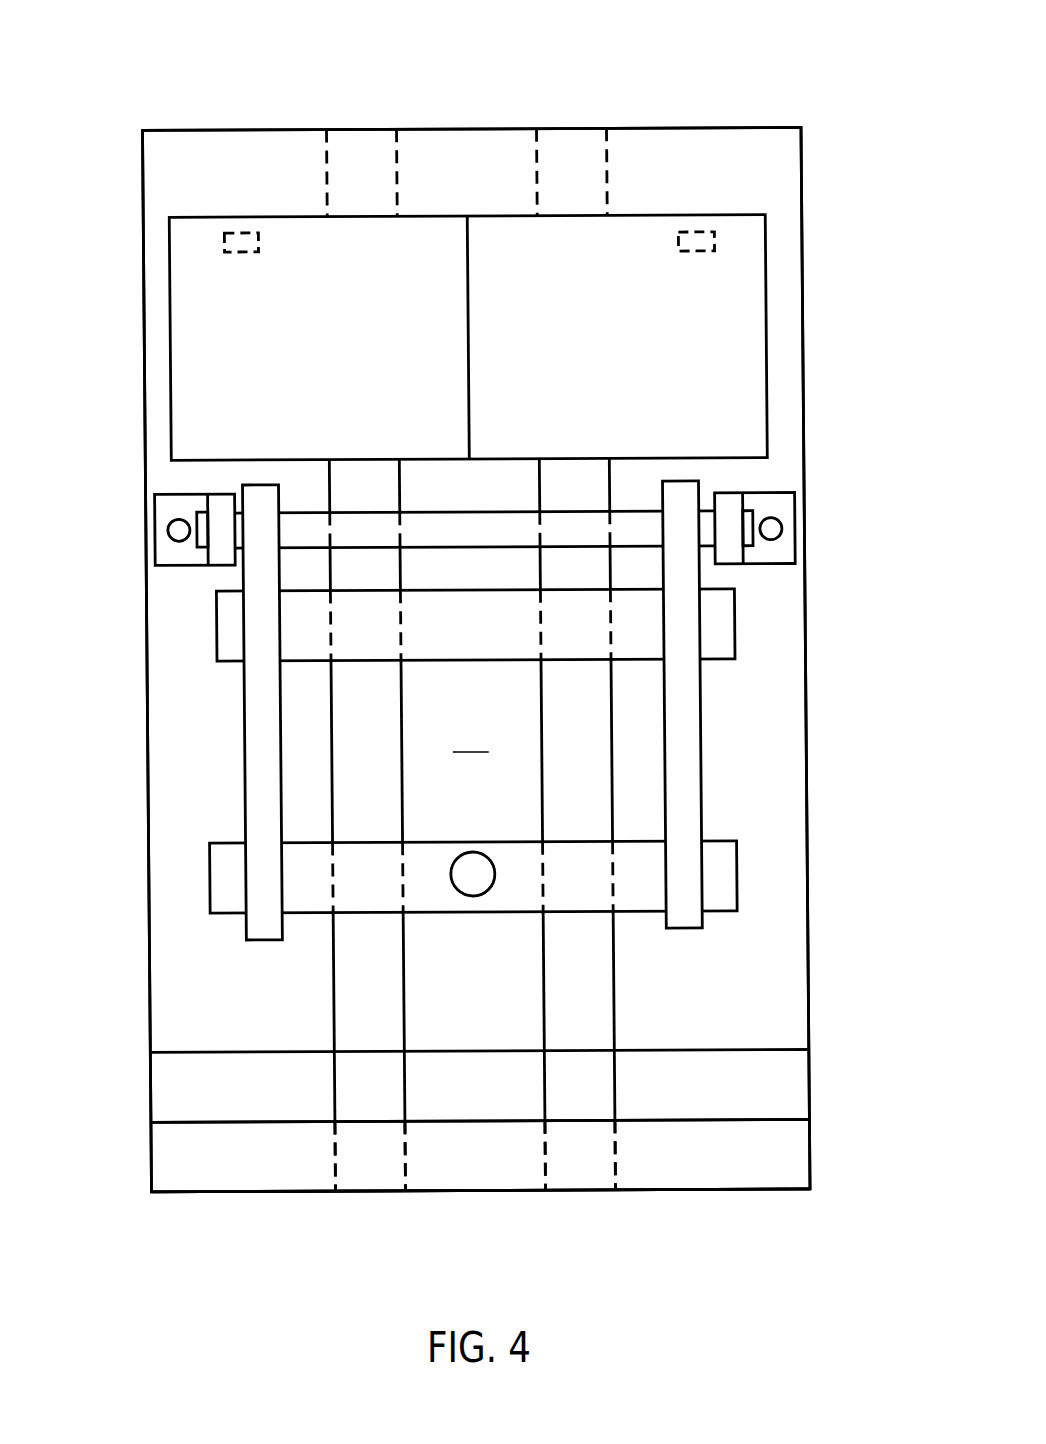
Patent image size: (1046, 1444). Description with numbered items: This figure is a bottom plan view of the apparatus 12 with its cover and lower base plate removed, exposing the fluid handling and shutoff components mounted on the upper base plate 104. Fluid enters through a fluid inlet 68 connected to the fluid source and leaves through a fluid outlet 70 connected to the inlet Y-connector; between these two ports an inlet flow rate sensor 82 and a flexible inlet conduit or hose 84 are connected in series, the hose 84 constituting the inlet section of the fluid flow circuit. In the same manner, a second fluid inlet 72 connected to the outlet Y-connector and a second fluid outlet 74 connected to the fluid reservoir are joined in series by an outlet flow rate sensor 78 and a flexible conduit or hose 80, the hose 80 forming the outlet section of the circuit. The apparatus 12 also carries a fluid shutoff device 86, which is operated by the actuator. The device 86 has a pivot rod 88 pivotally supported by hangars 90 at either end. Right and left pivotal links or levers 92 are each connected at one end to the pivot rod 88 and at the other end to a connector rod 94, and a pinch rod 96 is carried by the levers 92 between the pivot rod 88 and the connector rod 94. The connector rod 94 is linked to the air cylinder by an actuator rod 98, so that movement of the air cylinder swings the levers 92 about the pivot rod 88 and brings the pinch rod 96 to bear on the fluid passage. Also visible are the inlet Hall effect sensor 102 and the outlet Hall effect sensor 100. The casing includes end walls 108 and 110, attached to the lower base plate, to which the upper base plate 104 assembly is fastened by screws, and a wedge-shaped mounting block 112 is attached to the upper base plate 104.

The apparatus 12 is at (189, 98).
The fluid inlet 68 is at (592, 1173).
The fluid outlet 70 is at (586, 156).
The fluid inlet 72 is at (374, 148).
The fluid outlet 74 is at (345, 1172).
The outlet flow rate sensor 78 is at (180, 380).
The flexible conduit or hose 80 is at (331, 966).
The inlet flow rate sensor 82 is at (891, 346).
The flexible inlet conduit or hose 84 is at (615, 1024).
The fluid shutoff device 86 is at (466, 697).
The pivot rod 88 is at (638, 511).
The hangars 90 is at (165, 539).
The pivotal links or levers 92 is at (244, 752).
The connector rod 94 is at (722, 869).
The pinch rod 96 is at (729, 622).
The actuator rod 98 is at (471, 896).
The outlet Hall effect sensor 100 is at (229, 241).
The inlet Hall effect sensor 102 is at (722, 244).
The upper base plate 104 is at (471, 738).
The end wall 108 is at (806, 1162).
The end wall 110 is at (784, 145).
The wedge-shaped mounting block 112 is at (781, 1092).